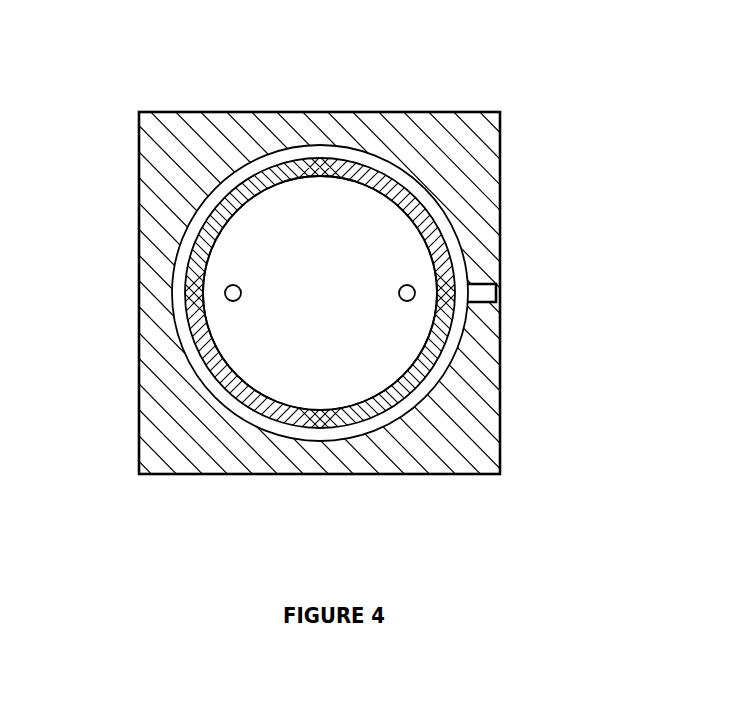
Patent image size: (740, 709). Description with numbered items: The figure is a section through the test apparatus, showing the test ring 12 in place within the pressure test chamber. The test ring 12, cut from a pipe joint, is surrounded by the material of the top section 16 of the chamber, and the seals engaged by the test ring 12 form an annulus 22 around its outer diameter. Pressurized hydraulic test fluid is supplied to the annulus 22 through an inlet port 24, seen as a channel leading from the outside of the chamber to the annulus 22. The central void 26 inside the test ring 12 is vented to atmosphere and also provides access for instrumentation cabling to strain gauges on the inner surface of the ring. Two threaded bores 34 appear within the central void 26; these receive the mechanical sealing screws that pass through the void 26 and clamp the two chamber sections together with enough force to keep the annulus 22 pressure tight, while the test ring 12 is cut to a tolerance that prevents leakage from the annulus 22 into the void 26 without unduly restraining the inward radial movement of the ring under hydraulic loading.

The test ring 12 is at (408, 178).
The top section 16 is at (478, 172).
The annulus 22 is at (420, 395).
The inlet port 24 is at (510, 293).
The central void 26 is at (290, 356).
The threaded bores 34 is at (399, 294).